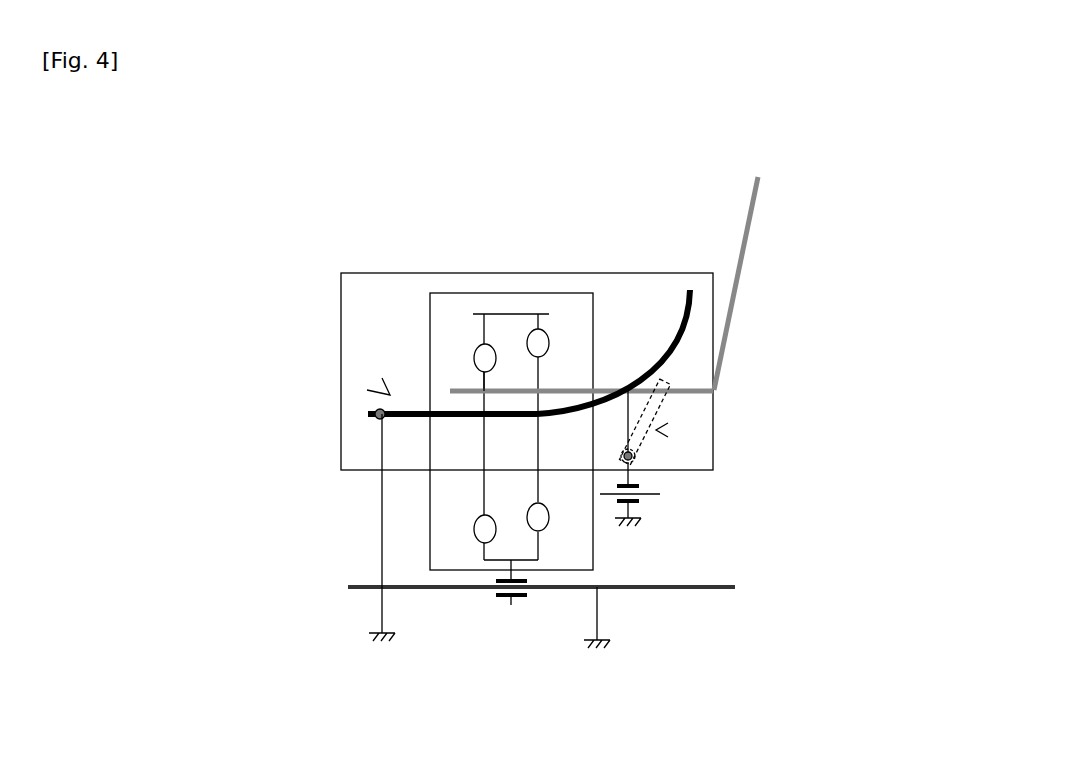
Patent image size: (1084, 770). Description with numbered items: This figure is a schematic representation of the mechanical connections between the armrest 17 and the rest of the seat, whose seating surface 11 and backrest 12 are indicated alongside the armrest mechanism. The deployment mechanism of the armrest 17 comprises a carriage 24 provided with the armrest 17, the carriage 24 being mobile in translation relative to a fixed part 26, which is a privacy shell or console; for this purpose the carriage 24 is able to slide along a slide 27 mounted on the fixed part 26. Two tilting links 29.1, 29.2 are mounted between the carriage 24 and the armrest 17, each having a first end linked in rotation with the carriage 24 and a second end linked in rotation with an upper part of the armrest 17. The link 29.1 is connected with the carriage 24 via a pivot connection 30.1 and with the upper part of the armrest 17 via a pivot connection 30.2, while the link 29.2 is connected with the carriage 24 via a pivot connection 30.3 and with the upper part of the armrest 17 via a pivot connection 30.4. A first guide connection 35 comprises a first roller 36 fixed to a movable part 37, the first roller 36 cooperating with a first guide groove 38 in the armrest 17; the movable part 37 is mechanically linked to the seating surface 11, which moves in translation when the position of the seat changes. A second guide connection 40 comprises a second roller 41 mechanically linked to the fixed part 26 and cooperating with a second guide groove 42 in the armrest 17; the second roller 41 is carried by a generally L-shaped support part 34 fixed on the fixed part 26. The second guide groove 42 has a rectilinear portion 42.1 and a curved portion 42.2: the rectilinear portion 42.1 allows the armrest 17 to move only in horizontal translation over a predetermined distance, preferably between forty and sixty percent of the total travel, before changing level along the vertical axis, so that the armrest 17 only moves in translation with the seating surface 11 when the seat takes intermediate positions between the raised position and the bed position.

The seating surface 11 is at (610, 330).
The backrest 12 is at (753, 205).
The armrest 17 is at (385, 273).
The carriage 24 is at (540, 545).
The fixed part 26 is at (381, 611).
The slide 27 is at (511, 605).
The tilting link 29.1 is at (487, 385).
The tilting link 29.2 is at (570, 390).
The pivot connection 30.1 is at (474, 532).
The pivot connection 30.2 is at (477, 347).
The pivot connection 30.3 is at (549, 521).
The pivot connection 30.4 is at (547, 333).
The support part 34 is at (382, 512).
The first guide connection 35 is at (658, 430).
The first roller 36 is at (634, 455).
The movable part 37 is at (668, 393).
The first guide groove 38 is at (660, 411).
The second guide connection 40 is at (390, 395).
The second roller 41 is at (380, 414).
The second guide groove 42 is at (412, 418).
The rectilinear portion 42.1 is at (450, 418).
The curved portion 42.2 is at (690, 307).